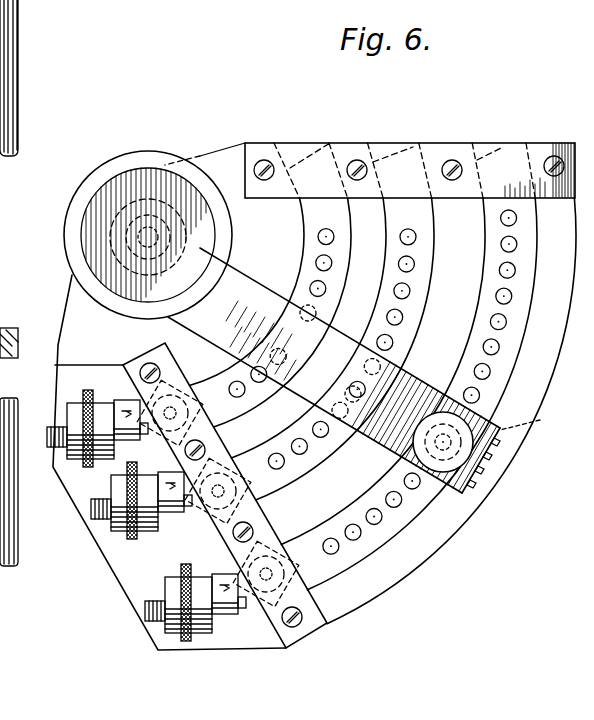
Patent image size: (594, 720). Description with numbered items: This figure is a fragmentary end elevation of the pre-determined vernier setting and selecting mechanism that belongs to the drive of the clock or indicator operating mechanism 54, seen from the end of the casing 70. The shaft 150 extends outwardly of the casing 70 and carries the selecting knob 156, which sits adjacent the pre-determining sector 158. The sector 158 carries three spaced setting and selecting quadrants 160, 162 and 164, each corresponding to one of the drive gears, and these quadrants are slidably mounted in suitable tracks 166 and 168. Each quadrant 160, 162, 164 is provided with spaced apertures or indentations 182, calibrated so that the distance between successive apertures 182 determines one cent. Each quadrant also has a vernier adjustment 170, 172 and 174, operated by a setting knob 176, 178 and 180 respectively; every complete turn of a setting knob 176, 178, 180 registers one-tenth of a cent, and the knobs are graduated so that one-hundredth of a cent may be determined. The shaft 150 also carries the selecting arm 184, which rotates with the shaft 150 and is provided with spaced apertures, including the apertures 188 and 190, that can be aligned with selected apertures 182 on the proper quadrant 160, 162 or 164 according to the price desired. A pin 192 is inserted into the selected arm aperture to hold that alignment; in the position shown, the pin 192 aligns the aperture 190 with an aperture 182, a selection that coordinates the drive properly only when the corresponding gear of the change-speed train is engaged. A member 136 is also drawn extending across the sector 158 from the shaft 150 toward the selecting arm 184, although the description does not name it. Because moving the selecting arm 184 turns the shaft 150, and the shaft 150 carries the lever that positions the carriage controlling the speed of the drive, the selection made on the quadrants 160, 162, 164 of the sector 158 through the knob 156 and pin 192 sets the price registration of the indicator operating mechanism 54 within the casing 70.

The casing 70 is at (8, 68).
The clock or indicator operating mechanism 54 is at (9, 464).
The selecting knob 156 is at (120, 168).
The shaft 150 is at (163, 165).
The pre-determining sector 158 is at (300, 140).
The setting and selecting quadrant 162 is at (403, 208).
The setting and selecting quadrant 164 is at (495, 208).
The track 166 is at (563, 143).
The setting and selecting quadrant 160 is at (308, 217).
The radial arm 136 is at (292, 335).
The apertures or indentations 182 is at (256, 372).
The aperture 188 is at (366, 389).
The aperture 190 is at (536, 420).
The pin 192 is at (466, 453).
The selecting arm 184 is at (462, 490).
The setting knob 176 is at (64, 476).
The vernier adjustment 170 is at (126, 452).
The vernier adjustment 172 is at (173, 533).
The vernier adjustment 174 is at (223, 633).
The setting knob 178 is at (130, 538).
The setting knob 180 is at (182, 638).
The track 168 is at (293, 637).